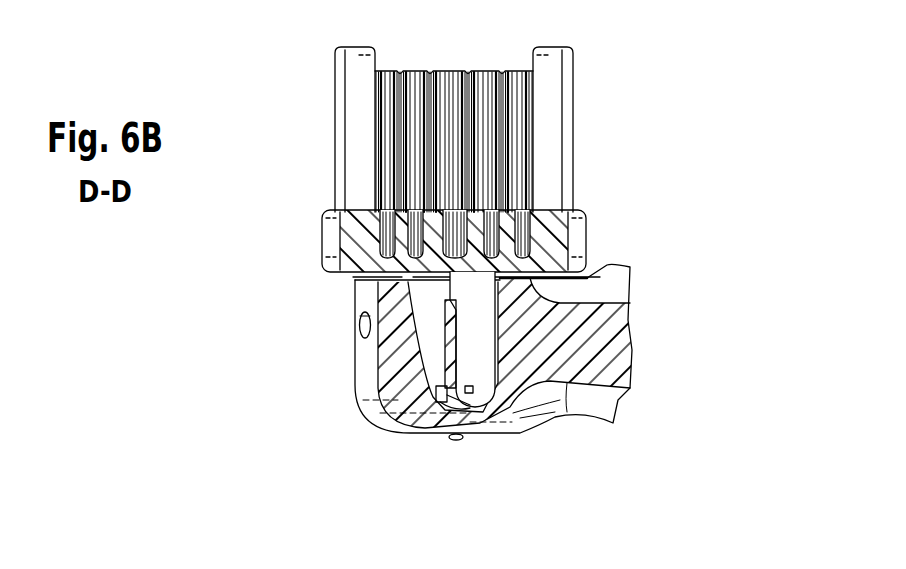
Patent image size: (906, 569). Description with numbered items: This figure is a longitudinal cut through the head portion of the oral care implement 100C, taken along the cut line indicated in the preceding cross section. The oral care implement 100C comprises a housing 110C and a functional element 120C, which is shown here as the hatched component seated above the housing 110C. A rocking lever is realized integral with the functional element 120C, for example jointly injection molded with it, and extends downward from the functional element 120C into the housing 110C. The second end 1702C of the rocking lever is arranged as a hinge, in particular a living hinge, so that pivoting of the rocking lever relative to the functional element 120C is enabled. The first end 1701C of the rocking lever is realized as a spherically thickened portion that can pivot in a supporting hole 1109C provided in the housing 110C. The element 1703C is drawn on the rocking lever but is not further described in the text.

The oral care implement 100C is at (636, 86).
The functional element 120C is at (595, 221).
The housing 110C is at (597, 343).
The second end 1702C is at (447, 292).
The latch rib 1703C is at (447, 338).
The first end 1701C is at (468, 402).
The supporting hole 1109C is at (453, 431).